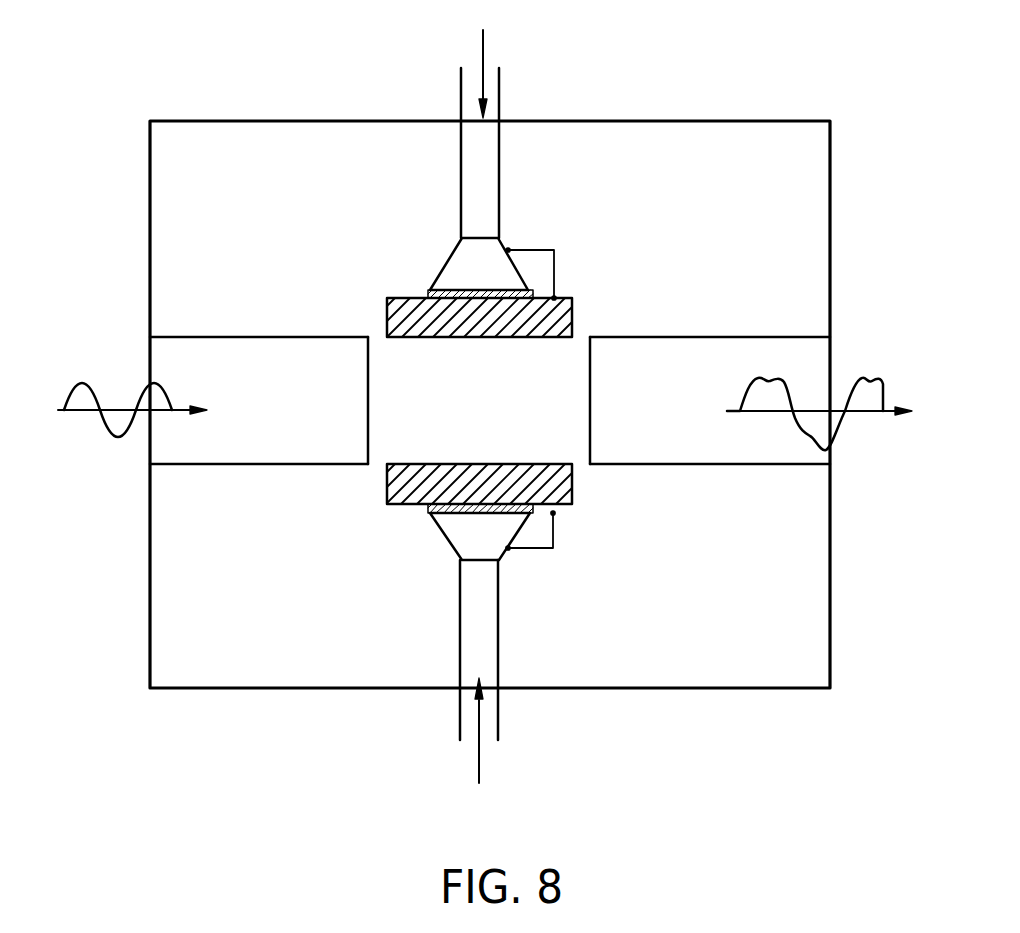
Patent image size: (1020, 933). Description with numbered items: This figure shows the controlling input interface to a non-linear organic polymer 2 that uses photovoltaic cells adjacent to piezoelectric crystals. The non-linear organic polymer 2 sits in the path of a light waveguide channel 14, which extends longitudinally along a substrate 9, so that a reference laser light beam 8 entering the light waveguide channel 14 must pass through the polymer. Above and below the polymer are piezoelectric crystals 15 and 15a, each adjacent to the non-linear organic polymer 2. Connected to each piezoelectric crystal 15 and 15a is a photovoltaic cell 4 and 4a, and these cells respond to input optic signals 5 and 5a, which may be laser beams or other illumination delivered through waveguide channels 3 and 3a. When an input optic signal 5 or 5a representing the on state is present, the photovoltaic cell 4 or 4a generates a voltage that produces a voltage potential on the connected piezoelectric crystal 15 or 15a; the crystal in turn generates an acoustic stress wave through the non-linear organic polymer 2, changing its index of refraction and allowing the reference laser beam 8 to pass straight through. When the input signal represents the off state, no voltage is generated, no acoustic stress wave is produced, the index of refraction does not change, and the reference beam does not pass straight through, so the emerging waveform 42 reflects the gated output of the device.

The non-linear organic polymer 2 is at (583, 398).
The waveguide channel 3 is at (497, 163).
The waveguide channel 3a is at (497, 668).
The photovoltaic cell 4 is at (452, 258).
The photovoltaic cell 4a is at (460, 538).
The input optic signal 5 is at (483, 43).
The input optic signal 5a is at (479, 770).
The reference laser light beam 8 is at (83, 412).
The substrate 9 is at (823, 170).
The light waveguide channel 14 is at (294, 350).
The piezoelectric crystal 15 is at (565, 325).
The piezoelectric crystal 15a is at (567, 493).
The output signal 42 is at (872, 417).